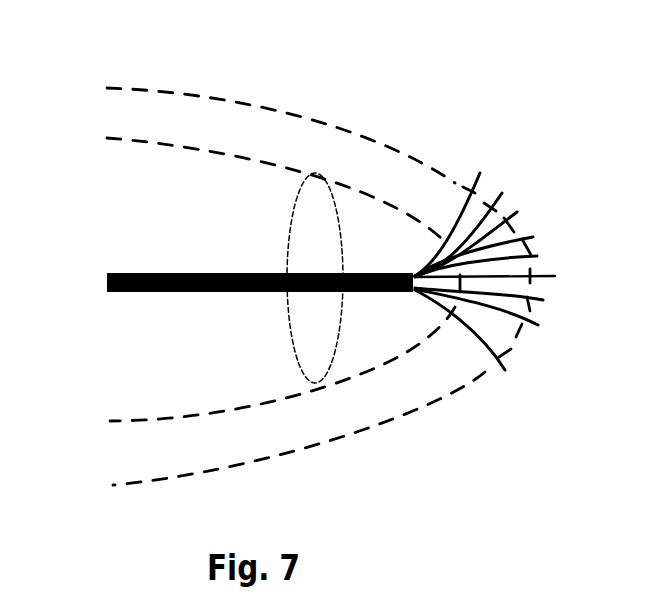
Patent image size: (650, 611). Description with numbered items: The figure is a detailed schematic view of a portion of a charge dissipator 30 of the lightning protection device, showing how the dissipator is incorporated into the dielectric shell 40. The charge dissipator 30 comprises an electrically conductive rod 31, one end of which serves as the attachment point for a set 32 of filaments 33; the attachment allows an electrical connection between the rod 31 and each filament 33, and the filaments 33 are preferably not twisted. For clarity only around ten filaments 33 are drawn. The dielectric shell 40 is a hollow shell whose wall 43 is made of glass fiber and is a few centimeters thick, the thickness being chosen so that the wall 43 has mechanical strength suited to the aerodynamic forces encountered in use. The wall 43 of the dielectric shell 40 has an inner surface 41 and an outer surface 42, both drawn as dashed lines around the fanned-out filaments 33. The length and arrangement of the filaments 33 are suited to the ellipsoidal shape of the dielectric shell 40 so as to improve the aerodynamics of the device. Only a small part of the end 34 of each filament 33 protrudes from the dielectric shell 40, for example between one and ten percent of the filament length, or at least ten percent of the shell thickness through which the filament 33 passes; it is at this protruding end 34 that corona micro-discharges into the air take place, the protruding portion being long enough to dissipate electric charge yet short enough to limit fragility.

The charge dissipator 30 is at (243, 242).
The rod 31 is at (131, 280).
The set of filaments 32 is at (557, 356).
The filament 33 is at (460, 214).
The end of filament 34 is at (502, 197).
The dielectric shell 40 is at (82, 148).
The inner surface 41 is at (155, 143).
The outer surface 42 is at (293, 116).
The wall 43 is at (218, 120).